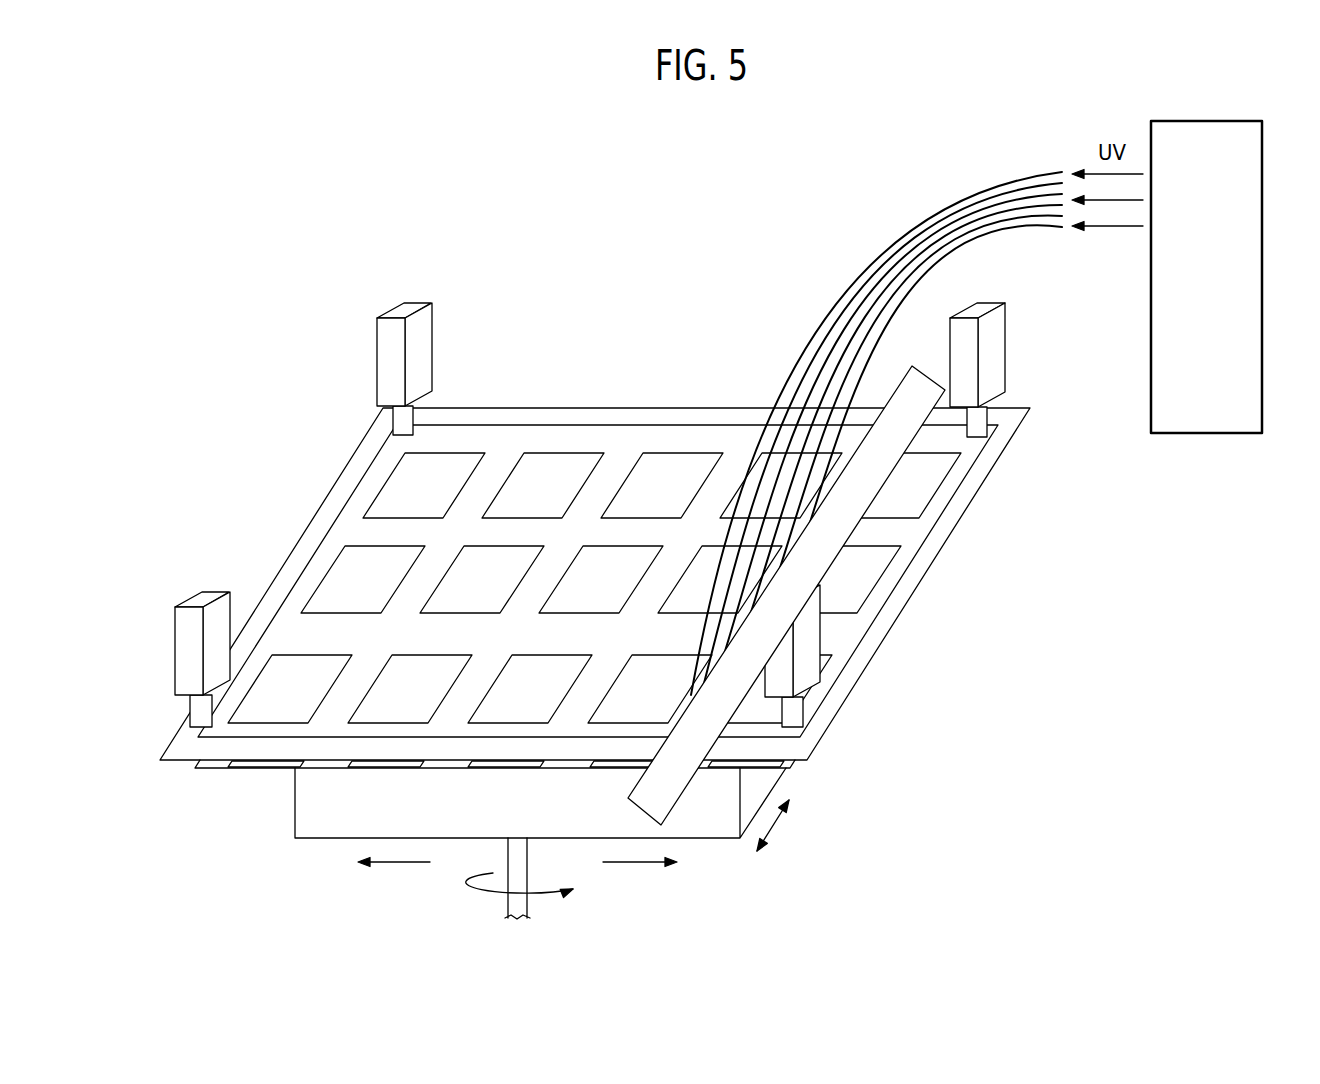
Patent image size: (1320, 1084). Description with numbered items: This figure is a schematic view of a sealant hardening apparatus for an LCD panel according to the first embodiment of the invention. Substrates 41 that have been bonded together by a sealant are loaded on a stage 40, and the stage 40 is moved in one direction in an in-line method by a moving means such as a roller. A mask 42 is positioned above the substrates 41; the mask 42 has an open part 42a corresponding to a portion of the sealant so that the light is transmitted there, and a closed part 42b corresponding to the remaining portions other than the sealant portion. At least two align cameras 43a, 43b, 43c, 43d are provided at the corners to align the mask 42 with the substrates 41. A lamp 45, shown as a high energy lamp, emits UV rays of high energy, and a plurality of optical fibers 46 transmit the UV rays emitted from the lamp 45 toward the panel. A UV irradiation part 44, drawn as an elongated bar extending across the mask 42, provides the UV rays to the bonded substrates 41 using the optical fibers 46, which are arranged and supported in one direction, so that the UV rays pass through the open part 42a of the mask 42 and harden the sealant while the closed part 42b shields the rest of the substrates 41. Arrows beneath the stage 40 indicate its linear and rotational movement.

The stage 40 is at (336, 823).
The substrates 41 is at (215, 770).
The mask 42 is at (598, 549).
The open part 42a is at (551, 458).
The closed part 42b is at (667, 458).
The align camera 43a is at (182, 652).
The align camera 43b is at (386, 361).
The align camera 43c is at (812, 642).
The align camera 43d is at (1000, 356).
The UV irradiation part 44 is at (678, 782).
The lamp 45 is at (1205, 423).
The optical fibers 46 is at (823, 306).